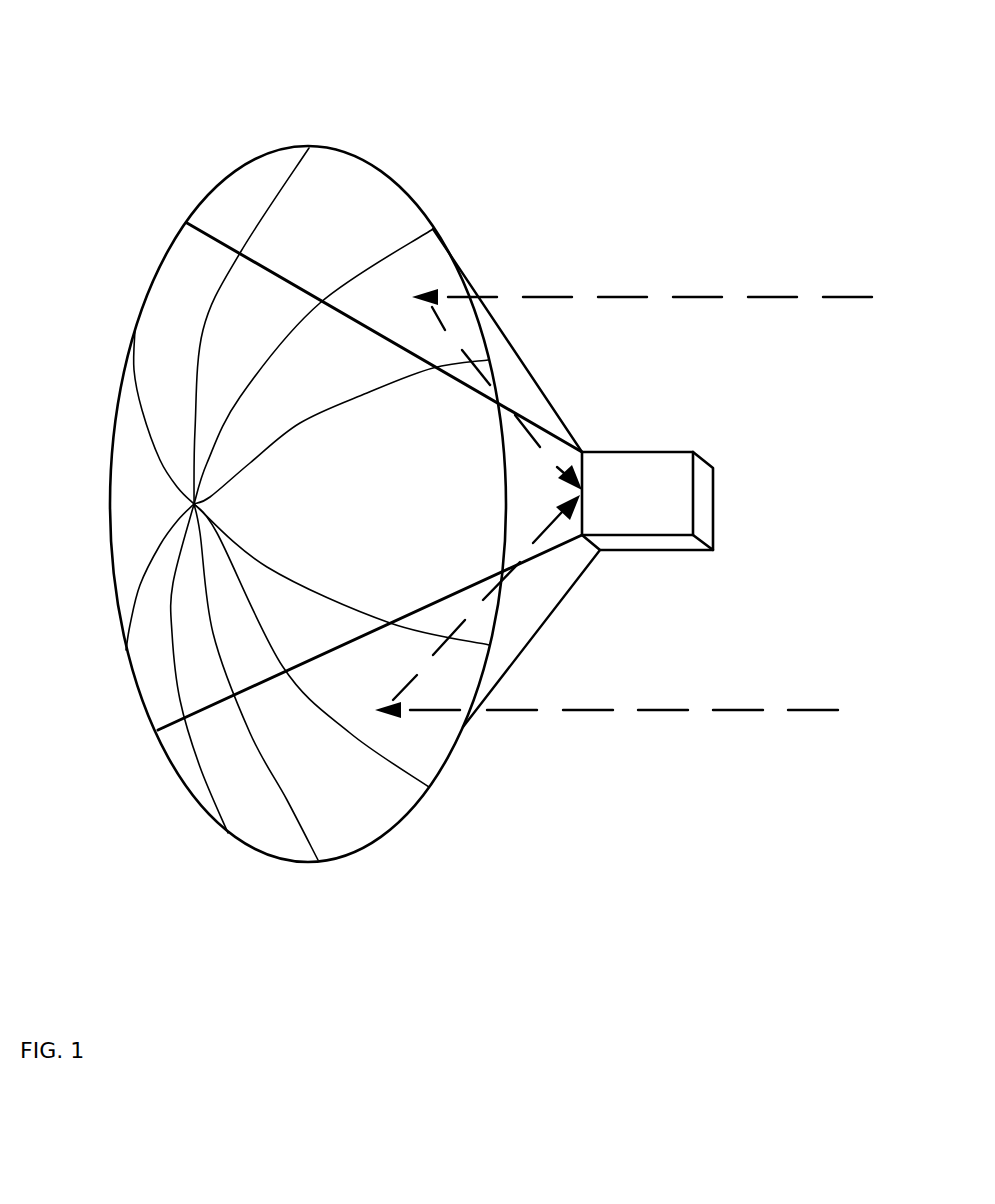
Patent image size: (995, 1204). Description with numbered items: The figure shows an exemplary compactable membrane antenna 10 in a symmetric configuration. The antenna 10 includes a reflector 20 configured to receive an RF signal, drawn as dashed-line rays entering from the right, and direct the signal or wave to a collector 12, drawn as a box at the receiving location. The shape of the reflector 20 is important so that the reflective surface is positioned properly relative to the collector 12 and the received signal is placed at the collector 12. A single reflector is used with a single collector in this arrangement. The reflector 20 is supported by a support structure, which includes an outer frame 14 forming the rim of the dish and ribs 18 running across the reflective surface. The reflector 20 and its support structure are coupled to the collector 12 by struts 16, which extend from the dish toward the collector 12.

The antenna 10 is at (683, 249).
The collector 12 is at (702, 522).
The outer frame 14 is at (380, 167).
The struts 16 is at (285, 278).
The ribs 18 is at (137, 407).
The reflector 20 is at (197, 278).